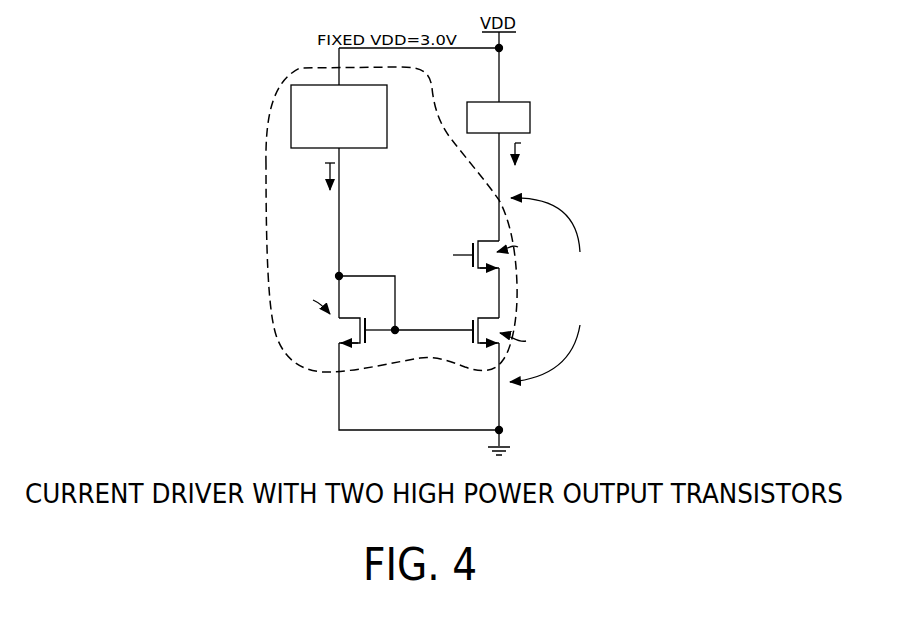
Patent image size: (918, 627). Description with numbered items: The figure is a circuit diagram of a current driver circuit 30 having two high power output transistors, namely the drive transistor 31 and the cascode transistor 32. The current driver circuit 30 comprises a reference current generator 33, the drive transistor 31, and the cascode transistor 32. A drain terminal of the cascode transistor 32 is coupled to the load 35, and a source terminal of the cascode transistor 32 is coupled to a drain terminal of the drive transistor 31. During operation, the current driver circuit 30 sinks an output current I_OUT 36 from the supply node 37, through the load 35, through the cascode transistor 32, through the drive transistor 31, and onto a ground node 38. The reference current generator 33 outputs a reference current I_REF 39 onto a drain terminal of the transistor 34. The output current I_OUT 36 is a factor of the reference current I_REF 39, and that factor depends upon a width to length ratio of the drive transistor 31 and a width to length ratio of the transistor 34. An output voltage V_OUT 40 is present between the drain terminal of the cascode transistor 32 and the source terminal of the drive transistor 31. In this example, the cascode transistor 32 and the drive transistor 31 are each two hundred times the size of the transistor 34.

The current driver circuit 30 is at (266, 165).
The drive transistor 31 is at (459, 340).
The cascode transistor 32 is at (466, 239).
The reference current generator 33 is at (389, 108).
The transistor 34 is at (348, 331).
The load 35 is at (533, 117).
The output current I_OUT 36 is at (518, 150).
The supply node 37 is at (504, 48).
The ground node 38 is at (504, 430).
The reference current I_REF 39 is at (328, 175).
The output voltage V_OUT 40 is at (587, 317).